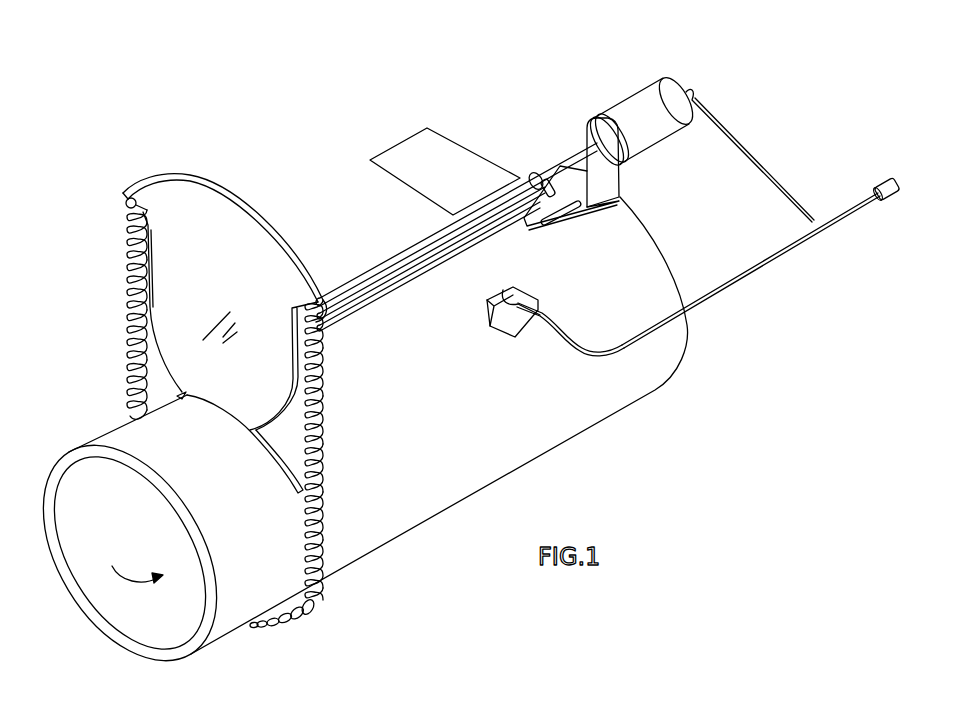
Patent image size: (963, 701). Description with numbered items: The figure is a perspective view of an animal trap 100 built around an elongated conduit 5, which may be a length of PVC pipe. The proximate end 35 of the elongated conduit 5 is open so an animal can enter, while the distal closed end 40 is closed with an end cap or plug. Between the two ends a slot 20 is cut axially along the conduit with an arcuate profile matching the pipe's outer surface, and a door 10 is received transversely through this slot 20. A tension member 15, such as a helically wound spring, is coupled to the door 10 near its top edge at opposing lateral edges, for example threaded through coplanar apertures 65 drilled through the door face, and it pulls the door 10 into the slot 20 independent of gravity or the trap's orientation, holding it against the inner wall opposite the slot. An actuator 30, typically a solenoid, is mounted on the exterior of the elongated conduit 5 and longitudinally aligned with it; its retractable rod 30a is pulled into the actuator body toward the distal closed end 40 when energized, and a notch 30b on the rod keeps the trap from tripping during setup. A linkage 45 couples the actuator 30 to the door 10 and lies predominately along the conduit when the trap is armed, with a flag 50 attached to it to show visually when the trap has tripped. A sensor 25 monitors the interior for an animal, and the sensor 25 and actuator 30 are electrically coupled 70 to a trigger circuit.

The animal trap 100 is at (191, 70).
The elongated conduit 5 is at (590, 428).
The door 10 is at (258, 212).
The tension member 15 is at (300, 608).
The slot 20 is at (282, 462).
The sensor 25 is at (515, 302).
The actuator 30 is at (655, 108).
The retractable rod 30a is at (580, 163).
The notch 30b is at (530, 172).
The proximate end 35 is at (133, 561).
The distal closed end 40 is at (652, 220).
The linkage 45 is at (413, 237).
The flag 50 is at (428, 155).
The coplanar apertures 65 is at (127, 198).
The electrical coupling 70 is at (891, 178).